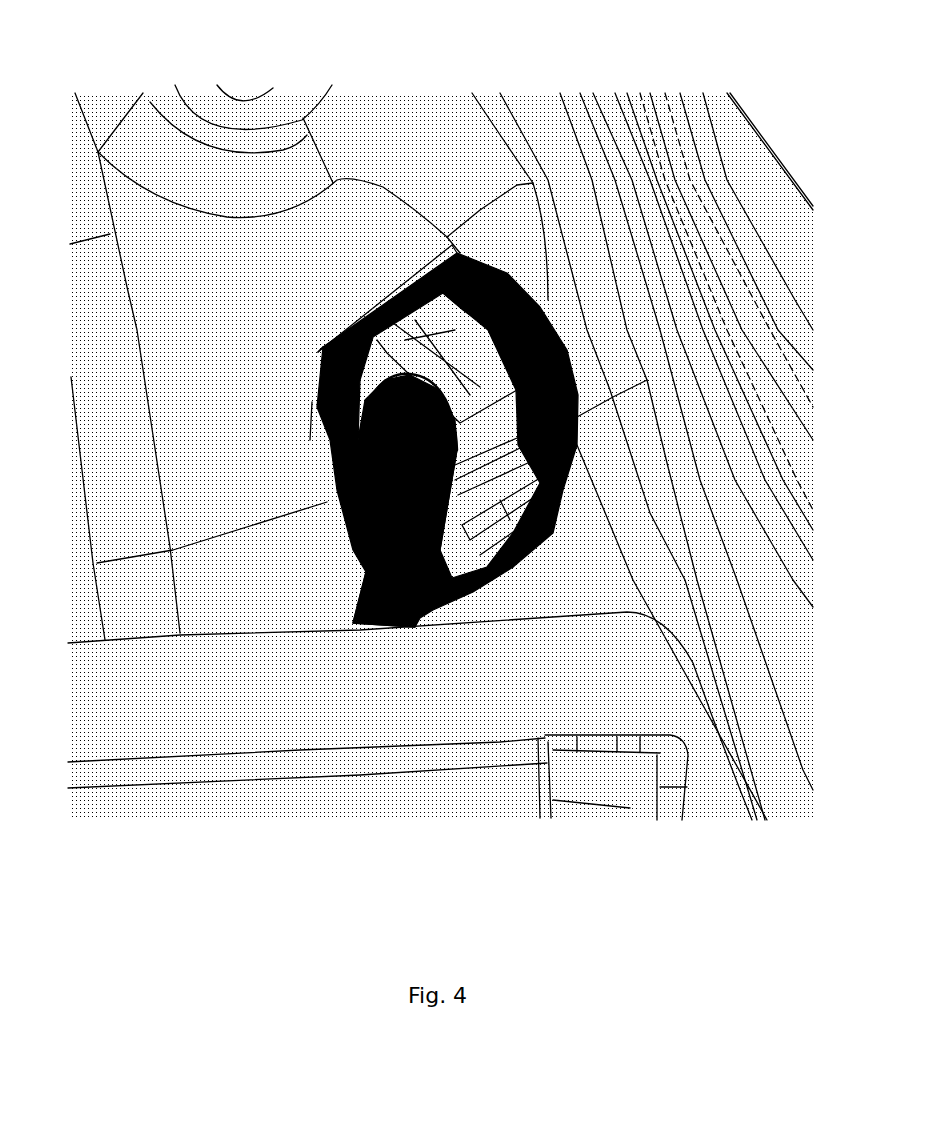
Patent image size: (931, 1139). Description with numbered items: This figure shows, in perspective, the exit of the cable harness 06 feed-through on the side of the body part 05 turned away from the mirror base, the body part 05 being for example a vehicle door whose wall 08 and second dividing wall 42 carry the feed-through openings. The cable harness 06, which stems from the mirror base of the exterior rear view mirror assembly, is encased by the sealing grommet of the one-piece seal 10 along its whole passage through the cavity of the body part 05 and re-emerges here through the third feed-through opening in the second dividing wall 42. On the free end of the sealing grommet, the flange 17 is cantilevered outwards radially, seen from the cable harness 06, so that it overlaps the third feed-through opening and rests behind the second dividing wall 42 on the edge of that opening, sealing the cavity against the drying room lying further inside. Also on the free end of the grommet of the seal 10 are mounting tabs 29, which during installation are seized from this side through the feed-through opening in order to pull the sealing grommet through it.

The body part 05 is at (186, 330).
The cable harness 06 is at (400, 520).
The wall 08 is at (262, 421).
The seal 10 is at (385, 290).
The flange 17 is at (337, 345).
The mounting tab 29 is at (537, 305).
The second dividing wall 42 is at (232, 374).